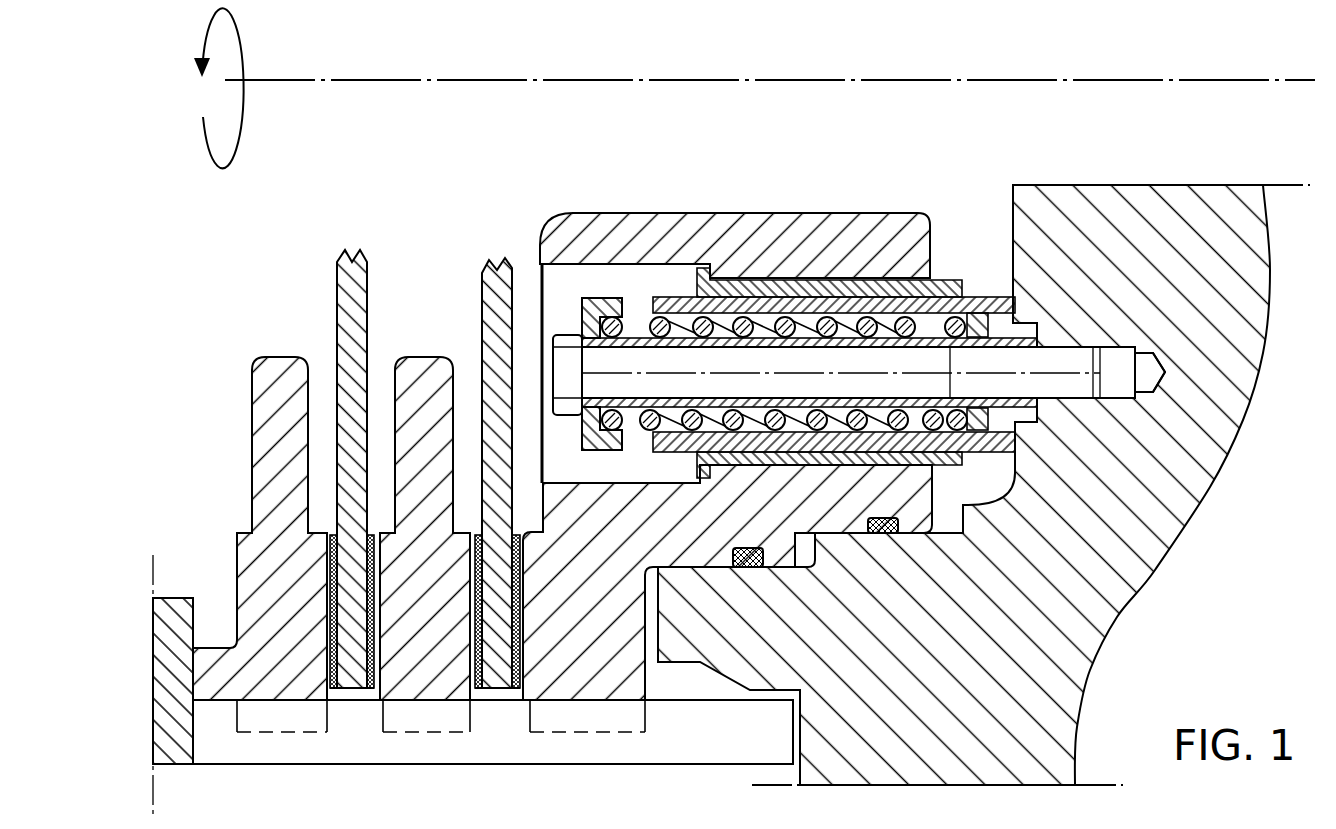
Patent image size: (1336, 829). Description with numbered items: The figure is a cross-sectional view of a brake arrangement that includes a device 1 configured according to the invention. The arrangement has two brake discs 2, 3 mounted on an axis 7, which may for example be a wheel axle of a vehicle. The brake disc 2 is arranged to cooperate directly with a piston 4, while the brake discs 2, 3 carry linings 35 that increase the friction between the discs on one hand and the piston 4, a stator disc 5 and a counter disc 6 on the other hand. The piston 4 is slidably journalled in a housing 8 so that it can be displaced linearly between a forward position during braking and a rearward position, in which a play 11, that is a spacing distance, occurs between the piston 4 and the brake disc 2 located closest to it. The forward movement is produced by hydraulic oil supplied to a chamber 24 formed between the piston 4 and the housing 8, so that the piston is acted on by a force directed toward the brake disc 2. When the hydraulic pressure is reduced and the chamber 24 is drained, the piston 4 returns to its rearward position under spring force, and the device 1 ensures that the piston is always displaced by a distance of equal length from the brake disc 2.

The device 1 is at (950, 258).
The brake disc 2 is at (487, 297).
The brake disc 3 is at (347, 298).
The piston 4 is at (670, 215).
The stator disc 5 is at (428, 370).
The counter disc 6 is at (258, 402).
The axis 7 is at (1183, 87).
The housing 8 is at (1157, 568).
The play 11 is at (331, 578).
The chamber 24 is at (803, 548).
The linings 35 is at (357, 680).